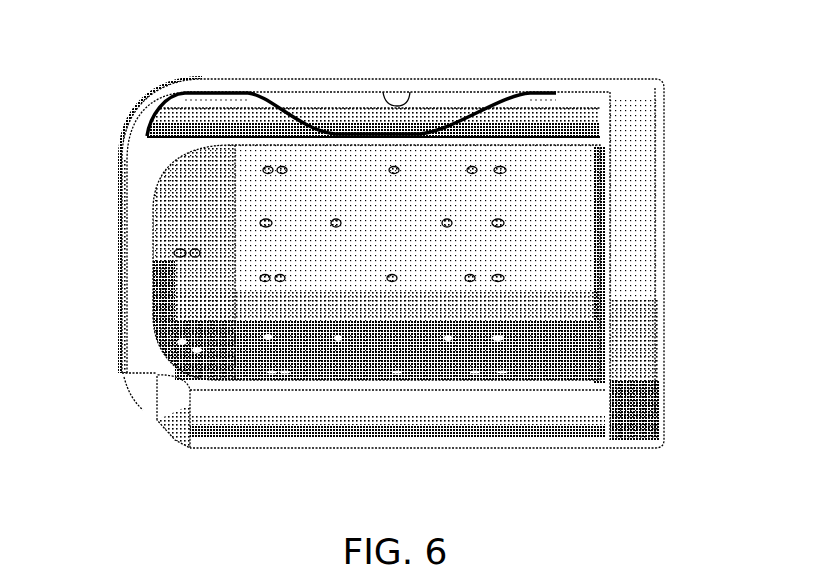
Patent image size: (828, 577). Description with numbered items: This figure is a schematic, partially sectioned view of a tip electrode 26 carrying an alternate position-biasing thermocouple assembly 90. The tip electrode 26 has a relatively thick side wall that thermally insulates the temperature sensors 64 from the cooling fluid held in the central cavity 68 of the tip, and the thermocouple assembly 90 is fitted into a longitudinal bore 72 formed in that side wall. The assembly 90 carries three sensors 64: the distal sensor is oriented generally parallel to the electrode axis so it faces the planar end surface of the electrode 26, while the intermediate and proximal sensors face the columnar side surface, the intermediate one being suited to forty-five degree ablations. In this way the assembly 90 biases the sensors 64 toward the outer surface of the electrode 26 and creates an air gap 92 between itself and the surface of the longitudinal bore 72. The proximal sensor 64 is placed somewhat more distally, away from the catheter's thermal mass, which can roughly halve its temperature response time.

The tip electrode 26 is at (120, 220).
The temperature sensors 64 is at (152, 120).
The central cavity 68 is at (377, 237).
The longitudinal bores 72 is at (409, 90).
The position-biasing thermocouple assembly 90 is at (277, 110).
The air gap 92 is at (210, 117).